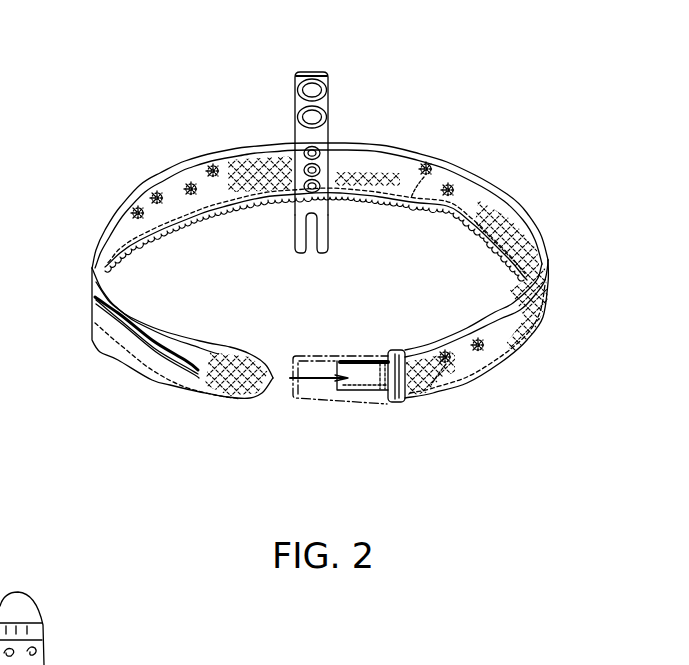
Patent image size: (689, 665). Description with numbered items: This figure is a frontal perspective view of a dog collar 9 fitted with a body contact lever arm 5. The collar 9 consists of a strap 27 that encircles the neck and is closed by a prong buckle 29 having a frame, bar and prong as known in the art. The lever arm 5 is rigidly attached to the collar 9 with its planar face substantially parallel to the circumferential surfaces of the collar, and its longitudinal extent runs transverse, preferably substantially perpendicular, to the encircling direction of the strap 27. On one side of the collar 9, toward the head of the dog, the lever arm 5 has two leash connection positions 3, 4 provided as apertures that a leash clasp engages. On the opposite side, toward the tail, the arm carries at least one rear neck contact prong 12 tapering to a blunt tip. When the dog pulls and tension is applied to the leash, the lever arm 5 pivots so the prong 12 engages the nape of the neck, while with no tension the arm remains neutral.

The leash connection position 3 is at (318, 117).
The leash connection position 4 is at (317, 92).
The body contact lever arm 5 is at (298, 149).
The dog collar 9 is at (128, 360).
The rear neck contact prong 12 is at (297, 252).
The strap 27 is at (305, 279).
The prong buckle 29 is at (312, 402).